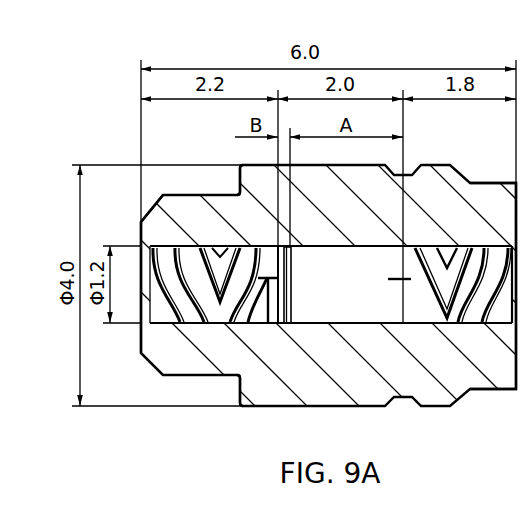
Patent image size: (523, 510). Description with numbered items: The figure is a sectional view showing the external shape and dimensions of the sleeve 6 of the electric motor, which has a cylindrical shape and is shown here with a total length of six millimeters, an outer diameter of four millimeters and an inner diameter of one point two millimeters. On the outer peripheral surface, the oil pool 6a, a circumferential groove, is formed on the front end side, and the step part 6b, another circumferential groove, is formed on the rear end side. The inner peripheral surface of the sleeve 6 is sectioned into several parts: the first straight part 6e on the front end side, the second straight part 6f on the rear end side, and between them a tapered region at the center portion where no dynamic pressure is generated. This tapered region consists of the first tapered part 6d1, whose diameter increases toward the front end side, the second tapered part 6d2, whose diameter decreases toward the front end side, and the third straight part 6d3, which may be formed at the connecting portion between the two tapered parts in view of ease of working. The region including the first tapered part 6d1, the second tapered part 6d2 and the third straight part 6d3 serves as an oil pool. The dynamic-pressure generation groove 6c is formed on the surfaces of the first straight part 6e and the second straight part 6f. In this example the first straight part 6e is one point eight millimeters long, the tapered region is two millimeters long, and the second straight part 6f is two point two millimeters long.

The sleeve 6 is at (467, 163).
The oil pool 6a is at (488, 390).
The step part 6b is at (238, 383).
The dynamic-pressure generation groove 6c is at (141, 340).
The first tapered part 6d1 is at (279, 325).
The second tapered part 6d2 is at (343, 300).
The third straight part 6d3 is at (287, 318).
The first straight part 6e is at (188, 252).
The second straight part 6f is at (436, 313).